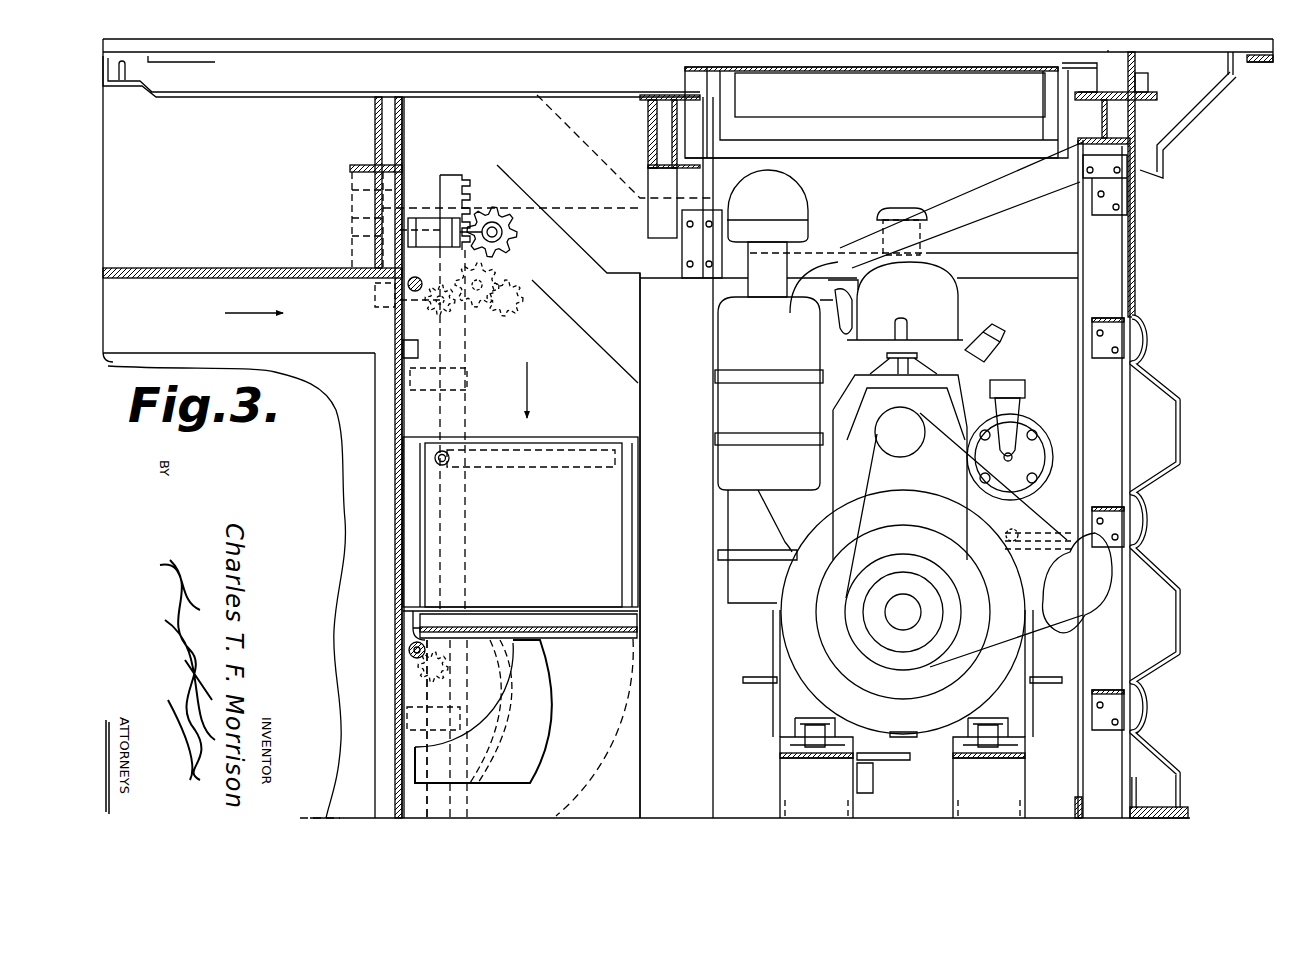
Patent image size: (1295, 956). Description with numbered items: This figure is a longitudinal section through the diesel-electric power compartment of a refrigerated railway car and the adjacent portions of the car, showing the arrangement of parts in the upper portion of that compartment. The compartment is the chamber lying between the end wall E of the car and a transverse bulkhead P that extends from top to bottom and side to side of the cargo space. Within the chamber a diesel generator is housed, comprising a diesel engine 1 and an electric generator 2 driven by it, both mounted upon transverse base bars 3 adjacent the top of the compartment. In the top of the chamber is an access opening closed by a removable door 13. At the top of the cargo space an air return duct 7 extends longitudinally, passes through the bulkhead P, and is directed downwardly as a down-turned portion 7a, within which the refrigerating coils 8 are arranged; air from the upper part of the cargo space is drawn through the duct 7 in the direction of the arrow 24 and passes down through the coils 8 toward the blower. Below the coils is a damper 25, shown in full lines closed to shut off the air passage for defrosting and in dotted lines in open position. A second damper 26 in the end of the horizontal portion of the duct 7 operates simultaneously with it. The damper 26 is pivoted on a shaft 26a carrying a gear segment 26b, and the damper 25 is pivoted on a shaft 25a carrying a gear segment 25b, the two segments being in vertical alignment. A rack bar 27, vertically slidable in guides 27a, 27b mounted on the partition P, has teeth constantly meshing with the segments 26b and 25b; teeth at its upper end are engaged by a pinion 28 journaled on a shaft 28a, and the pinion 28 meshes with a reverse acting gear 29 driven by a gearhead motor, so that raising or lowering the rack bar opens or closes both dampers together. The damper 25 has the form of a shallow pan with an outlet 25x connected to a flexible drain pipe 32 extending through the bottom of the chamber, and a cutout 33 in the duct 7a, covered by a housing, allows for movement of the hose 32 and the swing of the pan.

The diesel engine 1 is at (935, 316).
The electric generator 2 is at (912, 612).
The transverse base bars 3 is at (815, 758).
The air return duct 7 is at (166, 296).
The down-turned duct portion 7a is at (628, 418).
The refrigerating coils 8 is at (600, 558).
The removable door 13 is at (858, 70).
The arrow 24 is at (532, 385).
The damper 25 is at (612, 634).
The shaft 25a is at (409, 650).
The gear segment 25b is at (416, 672).
The outlet 25x is at (560, 640).
The damper 26 is at (422, 318).
The shaft 26a is at (408, 282).
The gear segment 26b is at (378, 297).
The rack bar 27 is at (447, 183).
The guide 27a is at (471, 186).
The guide 27b is at (468, 706).
The pinion 28 is at (513, 241).
The shaft 28a is at (497, 227).
The reverse acting gear 29 is at (508, 302).
The drain pipe 32 is at (488, 812).
The cutout 33 is at (542, 722).
The bulkhead P is at (392, 464).
The end wall E is at (1138, 294).